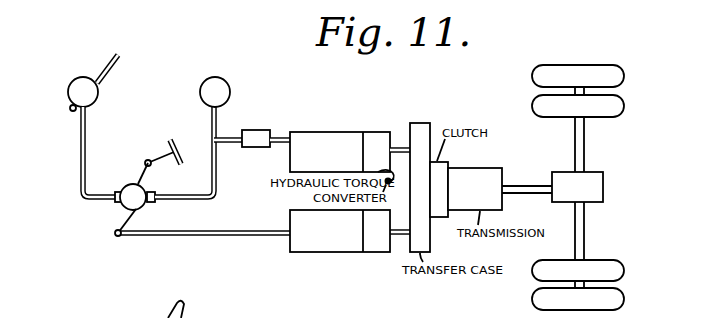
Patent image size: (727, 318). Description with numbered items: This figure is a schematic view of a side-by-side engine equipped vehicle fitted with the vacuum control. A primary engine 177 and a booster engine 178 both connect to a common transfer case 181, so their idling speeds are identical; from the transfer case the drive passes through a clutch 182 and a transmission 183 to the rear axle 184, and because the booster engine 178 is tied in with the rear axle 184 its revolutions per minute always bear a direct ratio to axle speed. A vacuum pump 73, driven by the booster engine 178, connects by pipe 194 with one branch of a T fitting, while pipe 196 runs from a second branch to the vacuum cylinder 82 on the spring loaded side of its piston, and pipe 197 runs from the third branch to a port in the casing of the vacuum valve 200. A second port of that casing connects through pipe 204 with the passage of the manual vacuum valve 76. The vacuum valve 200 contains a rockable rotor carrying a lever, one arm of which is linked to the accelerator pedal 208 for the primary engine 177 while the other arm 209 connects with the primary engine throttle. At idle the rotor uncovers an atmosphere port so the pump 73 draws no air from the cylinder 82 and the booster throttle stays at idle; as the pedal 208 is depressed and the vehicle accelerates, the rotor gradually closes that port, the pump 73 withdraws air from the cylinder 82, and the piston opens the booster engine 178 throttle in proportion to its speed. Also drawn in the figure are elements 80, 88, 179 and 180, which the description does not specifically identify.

The vacuum pump 73 is at (230, 92).
The manual vacuum valve 76 is at (99, 93).
The control lever 80 is at (118, 63).
The vacuum cylinder 82 is at (247, 130).
The shaft 88 is at (276, 136).
The primary engine 177 is at (290, 241).
The booster engine 178 is at (290, 161).
The primary engine torque converter 179 is at (373, 253).
The booster engine torque converter 180 is at (374, 132).
The transfer case 181 is at (420, 123).
The clutch 182 is at (449, 164).
The transmission 183 is at (485, 197).
The rear axle 184 is at (584, 147).
The pipe 194 is at (212, 117).
The pipe 196 is at (233, 143).
The pipe 197 is at (183, 194).
The vacuum valve 200 is at (124, 204).
The pipe 204 is at (80, 157).
The accelerator pedal 208 is at (171, 141).
The arm 209 is at (112, 237).